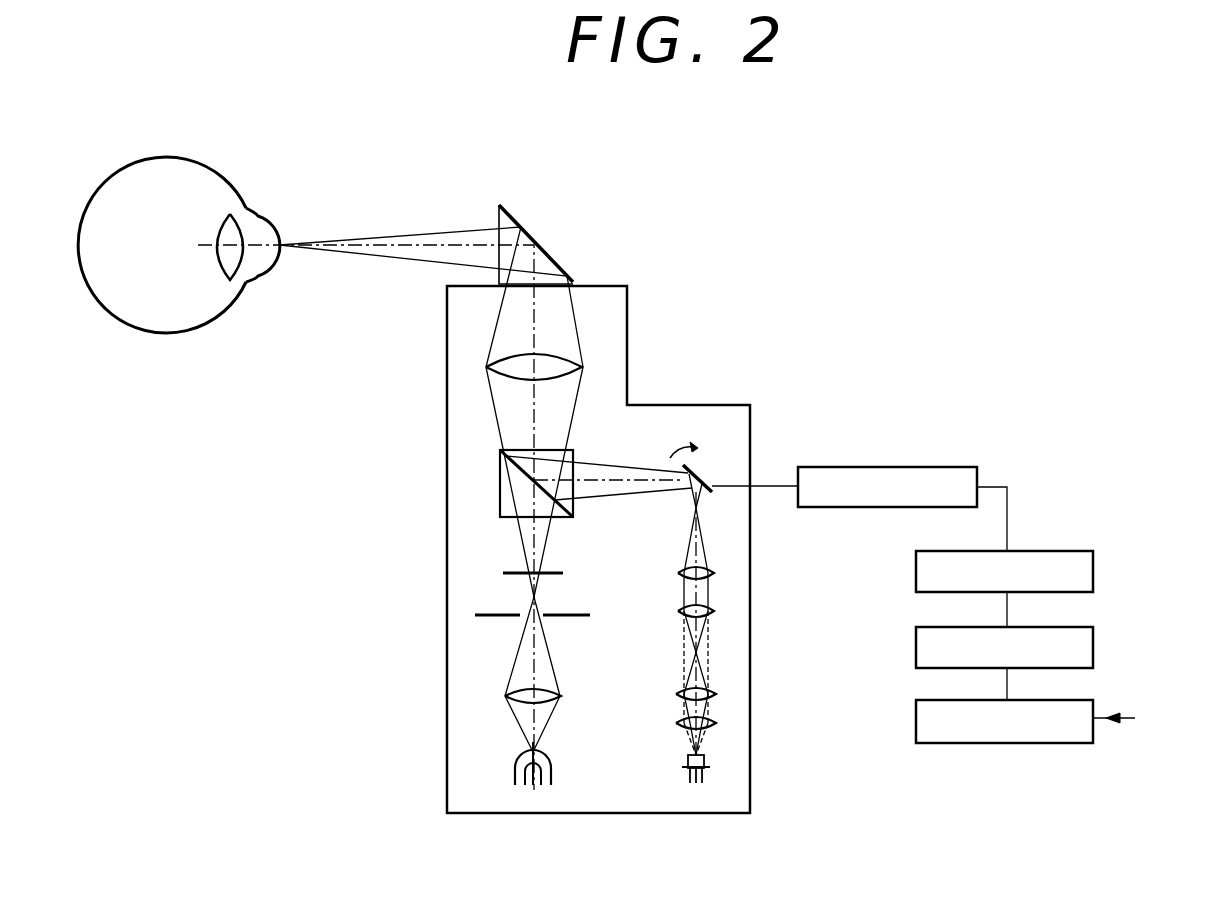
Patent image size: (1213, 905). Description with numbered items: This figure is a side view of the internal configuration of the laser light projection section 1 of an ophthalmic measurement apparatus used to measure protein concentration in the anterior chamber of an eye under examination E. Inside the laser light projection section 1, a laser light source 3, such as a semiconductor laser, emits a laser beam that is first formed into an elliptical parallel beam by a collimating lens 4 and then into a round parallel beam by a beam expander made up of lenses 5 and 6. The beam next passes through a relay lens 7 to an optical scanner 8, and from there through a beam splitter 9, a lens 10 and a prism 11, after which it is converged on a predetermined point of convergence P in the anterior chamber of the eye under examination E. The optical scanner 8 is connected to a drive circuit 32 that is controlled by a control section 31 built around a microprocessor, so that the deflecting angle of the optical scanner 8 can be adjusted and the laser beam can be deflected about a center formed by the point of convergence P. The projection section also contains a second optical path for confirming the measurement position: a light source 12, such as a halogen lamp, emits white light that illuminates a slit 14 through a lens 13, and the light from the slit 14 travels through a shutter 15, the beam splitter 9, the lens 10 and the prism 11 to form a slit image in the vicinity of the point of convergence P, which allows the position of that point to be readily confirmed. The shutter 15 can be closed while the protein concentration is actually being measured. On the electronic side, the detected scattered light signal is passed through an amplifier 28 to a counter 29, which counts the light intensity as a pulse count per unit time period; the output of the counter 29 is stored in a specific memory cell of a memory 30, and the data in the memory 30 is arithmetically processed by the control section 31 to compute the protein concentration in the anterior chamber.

The eye under examination E is at (137, 160).
The point of convergence P is at (262, 240).
The laser light projection section 1 is at (628, 327).
The laser light source 3 is at (710, 767).
The collimating lens 4 is at (716, 723).
The lens 5 is at (716, 692).
The lens 6 is at (714, 610).
The relay lens 7 is at (714, 571).
The optical scanner 8 is at (708, 473).
The beam splitter 9 is at (500, 470).
The lens 10 is at (487, 366).
The prism 11 is at (529, 232).
The light source 12 is at (515, 768).
The lens 13 is at (506, 694).
The slit 14 is at (486, 607).
The shutter 15 is at (506, 567).
The amplifier 28 is at (1134, 720).
The counter 29 is at (1073, 700).
The memory 30 is at (1073, 627).
The control section 31 is at (1073, 551).
The drive circuit 32 is at (917, 467).